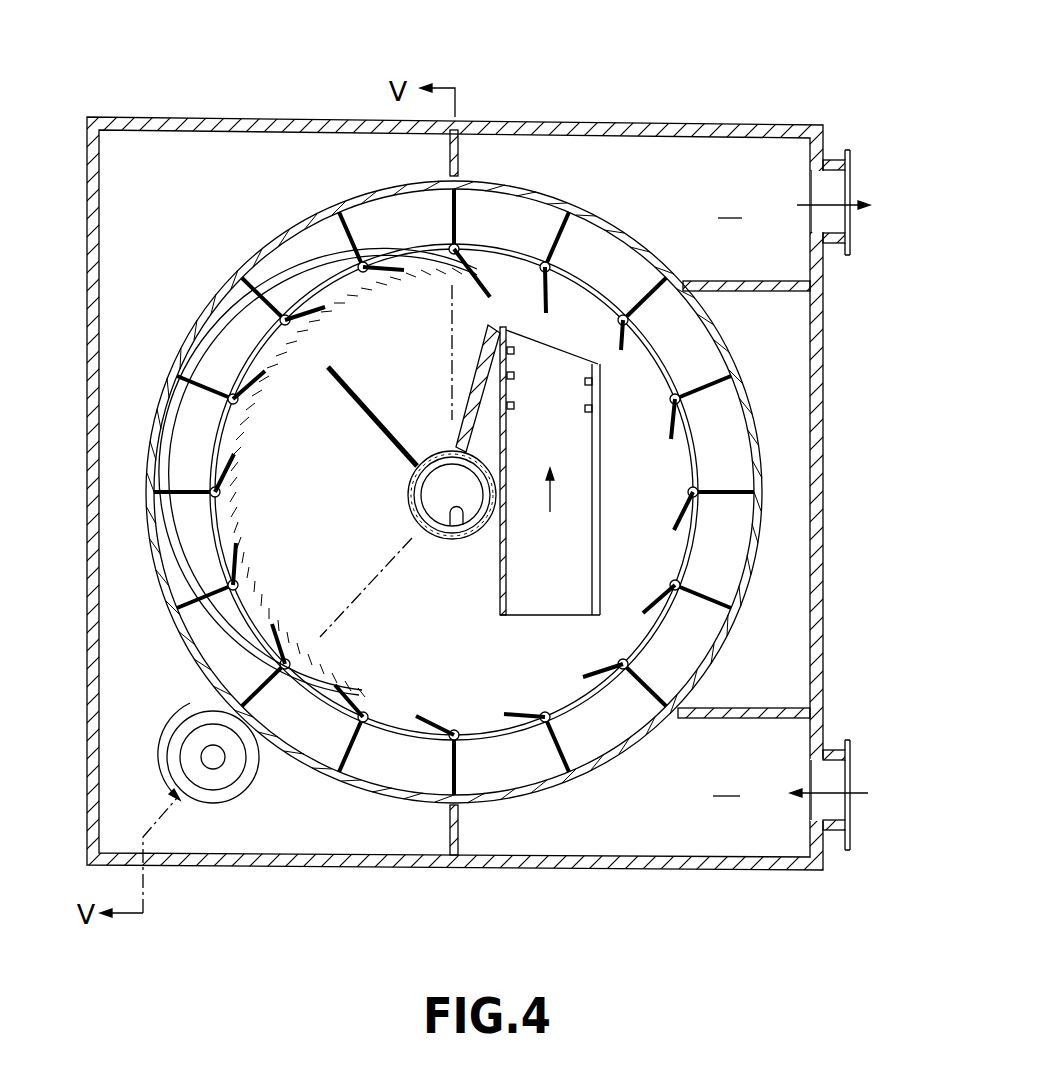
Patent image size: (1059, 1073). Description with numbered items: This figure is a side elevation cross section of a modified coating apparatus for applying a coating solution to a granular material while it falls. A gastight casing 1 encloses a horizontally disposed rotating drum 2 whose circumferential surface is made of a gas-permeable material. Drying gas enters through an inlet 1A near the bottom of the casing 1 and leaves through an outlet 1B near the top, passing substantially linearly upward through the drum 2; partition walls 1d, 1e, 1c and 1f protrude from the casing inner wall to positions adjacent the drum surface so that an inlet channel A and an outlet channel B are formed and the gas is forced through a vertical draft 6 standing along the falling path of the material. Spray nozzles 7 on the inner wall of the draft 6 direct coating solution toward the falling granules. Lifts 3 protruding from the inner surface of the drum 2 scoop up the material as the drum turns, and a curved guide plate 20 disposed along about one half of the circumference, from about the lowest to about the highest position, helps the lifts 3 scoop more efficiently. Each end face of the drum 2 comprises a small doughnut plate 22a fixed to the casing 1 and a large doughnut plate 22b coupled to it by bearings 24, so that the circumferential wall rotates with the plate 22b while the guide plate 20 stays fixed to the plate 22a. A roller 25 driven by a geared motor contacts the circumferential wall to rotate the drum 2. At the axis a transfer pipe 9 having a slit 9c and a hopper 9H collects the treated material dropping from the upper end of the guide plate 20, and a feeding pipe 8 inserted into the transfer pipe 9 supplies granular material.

The casing 1 is at (719, 125).
The inlet 1A is at (836, 808).
The outlet 1B is at (838, 183).
The partition wall 1c is at (772, 291).
The partition wall 1d is at (763, 708).
The partition wall 1e is at (458, 832).
The partition wall 1f is at (458, 156).
The rotating drum 2 is at (632, 272).
The lifts 3 is at (226, 393).
The draft 6 is at (600, 535).
The spray nozzles 7 is at (600, 457).
The feeding pipe 8 is at (427, 540).
The transfer pipe 9 is at (453, 540).
The slit 9c is at (444, 438).
The hopper 9H is at (383, 430).
The guide plate 20 is at (240, 507).
The doughnut plate of small diameter 22a is at (513, 287).
The doughnut plate of large diameter 22b is at (645, 236).
The bearings 24 is at (648, 262).
The roller 25 is at (222, 782).